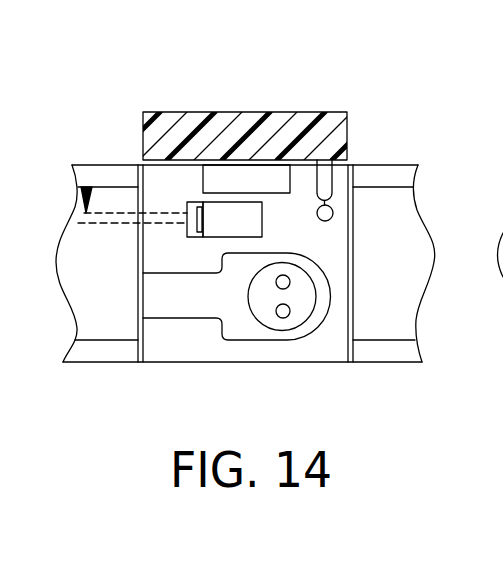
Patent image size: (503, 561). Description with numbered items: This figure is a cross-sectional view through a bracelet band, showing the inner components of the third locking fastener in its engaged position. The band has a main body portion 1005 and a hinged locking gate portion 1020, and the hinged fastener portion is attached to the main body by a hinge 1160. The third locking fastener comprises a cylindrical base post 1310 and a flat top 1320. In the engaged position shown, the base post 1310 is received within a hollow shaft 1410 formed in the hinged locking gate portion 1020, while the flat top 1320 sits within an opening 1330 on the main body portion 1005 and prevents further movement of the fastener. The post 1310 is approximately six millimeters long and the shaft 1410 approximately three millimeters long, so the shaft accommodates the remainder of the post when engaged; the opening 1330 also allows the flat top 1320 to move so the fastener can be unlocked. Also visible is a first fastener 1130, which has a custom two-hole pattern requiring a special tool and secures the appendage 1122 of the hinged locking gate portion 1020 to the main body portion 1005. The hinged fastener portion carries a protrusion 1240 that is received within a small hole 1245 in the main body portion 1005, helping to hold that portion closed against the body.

The main body portion 1005 is at (408, 260).
The hinged locking gate portion 1020 is at (83, 313).
The appendage 1122 is at (248, 343).
The first fastener 1130 is at (297, 316).
The hinge 1160 is at (272, 190).
The protrusion 1240 is at (328, 183).
The small hole 1245 is at (333, 211).
The cylindrical base post 1310 is at (195, 207).
The flat top 1320 is at (200, 212).
The opening 1330 is at (263, 215).
The hollow shaft 1410 is at (86, 188).